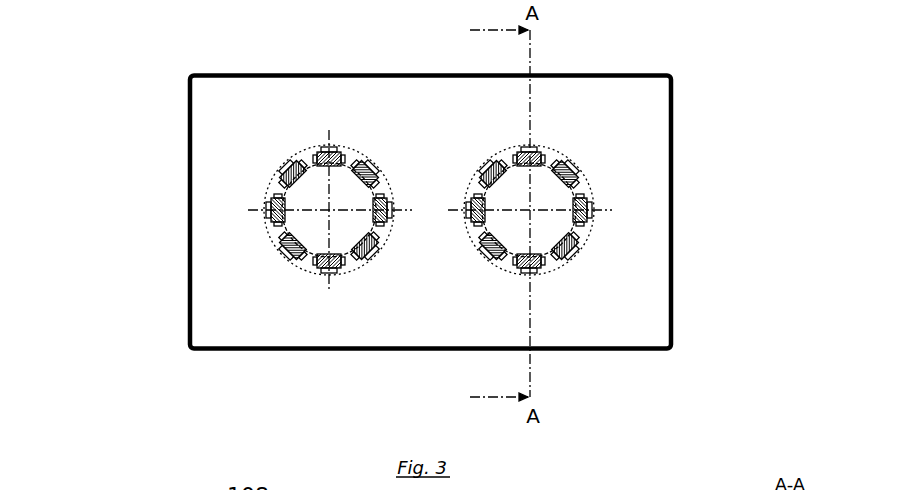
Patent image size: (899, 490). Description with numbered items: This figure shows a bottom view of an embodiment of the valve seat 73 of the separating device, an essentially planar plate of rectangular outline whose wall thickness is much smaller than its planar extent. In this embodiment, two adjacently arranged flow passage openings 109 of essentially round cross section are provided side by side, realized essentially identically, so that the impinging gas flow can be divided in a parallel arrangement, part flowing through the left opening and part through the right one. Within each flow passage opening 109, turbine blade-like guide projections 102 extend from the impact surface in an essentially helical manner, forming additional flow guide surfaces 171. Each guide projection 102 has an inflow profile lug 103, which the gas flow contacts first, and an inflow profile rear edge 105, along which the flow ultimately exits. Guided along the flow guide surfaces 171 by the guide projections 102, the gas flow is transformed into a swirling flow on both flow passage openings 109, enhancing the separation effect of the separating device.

The valve seat 73 is at (705, 122).
The turbine blade-like guide projections 102 is at (285, 180).
The inflow profile lug 103 is at (327, 150).
The inflow profile rear edge 105 is at (300, 152).
The flow passage opening 109 is at (515, 195).
The flow guide surfaces 171 is at (502, 265).